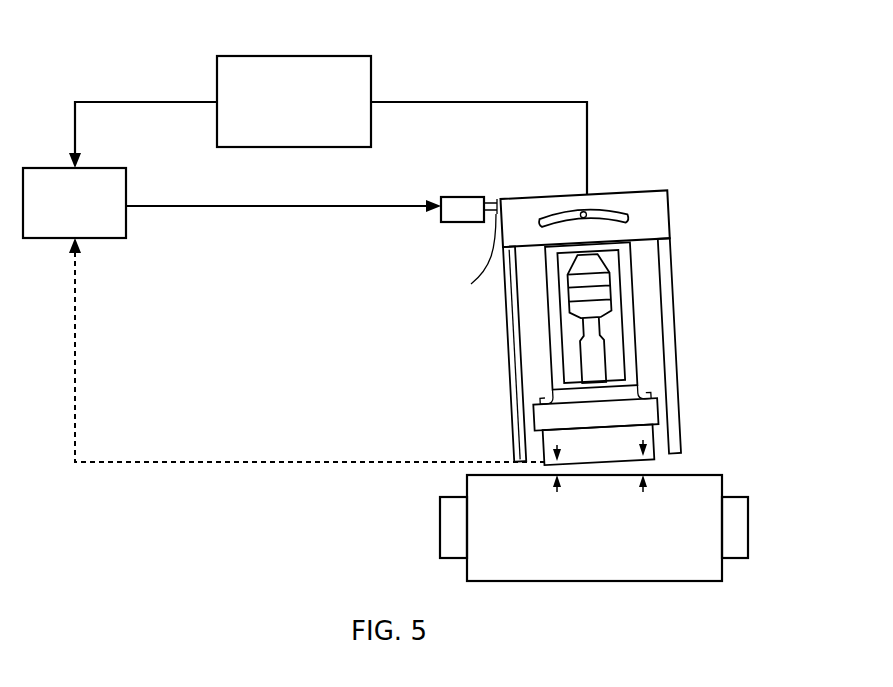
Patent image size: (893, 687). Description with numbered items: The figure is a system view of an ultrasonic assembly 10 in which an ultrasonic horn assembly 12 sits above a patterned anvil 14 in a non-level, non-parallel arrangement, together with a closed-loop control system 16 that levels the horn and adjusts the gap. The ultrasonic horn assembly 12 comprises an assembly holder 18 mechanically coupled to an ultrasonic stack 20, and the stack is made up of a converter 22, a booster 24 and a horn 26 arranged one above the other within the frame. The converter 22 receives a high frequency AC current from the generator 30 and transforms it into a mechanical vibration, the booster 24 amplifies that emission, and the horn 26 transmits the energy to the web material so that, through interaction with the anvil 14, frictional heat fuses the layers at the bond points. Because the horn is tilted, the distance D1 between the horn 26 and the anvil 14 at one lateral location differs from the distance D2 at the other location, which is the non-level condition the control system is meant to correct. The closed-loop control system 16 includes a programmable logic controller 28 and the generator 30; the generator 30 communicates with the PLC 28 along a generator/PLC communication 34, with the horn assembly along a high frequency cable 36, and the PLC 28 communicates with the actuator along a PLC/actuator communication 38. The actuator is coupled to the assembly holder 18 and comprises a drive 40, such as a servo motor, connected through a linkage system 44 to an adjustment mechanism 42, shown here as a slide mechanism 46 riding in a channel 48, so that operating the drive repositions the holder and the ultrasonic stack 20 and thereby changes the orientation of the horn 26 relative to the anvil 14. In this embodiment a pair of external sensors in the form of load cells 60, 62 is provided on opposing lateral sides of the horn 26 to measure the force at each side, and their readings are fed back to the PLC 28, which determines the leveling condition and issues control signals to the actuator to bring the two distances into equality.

The ultrasonic assembly 10 is at (668, 90).
The ultrasonic horn assembly 12 is at (718, 282).
The patterned anvil 14 is at (658, 582).
The closed-loop control system 16 is at (203, 280).
The assembly holder 18 is at (508, 386).
The ultrasonic stack 20 is at (540, 318).
The converter 22 is at (608, 292).
The booster 24 is at (598, 328).
The horn 26 is at (655, 428).
The programmable logic controller 28 is at (98, 238).
The generator 30 is at (310, 147).
The generator/PLC communication 34 is at (117, 102).
The high frequency cable 36 is at (488, 102).
The PLC/actuator communication 38 is at (260, 206).
The drive 40 is at (465, 222).
The adjustment mechanism 42 is at (599, 165).
The linkage system 44 is at (469, 260).
The slide mechanism 46 is at (587, 212).
The channel 48 is at (625, 213).
The first load cell 60 is at (655, 450).
The second load cell 62 is at (547, 458).
The distance D1 is at (645, 492).
The distance D2 is at (555, 492).